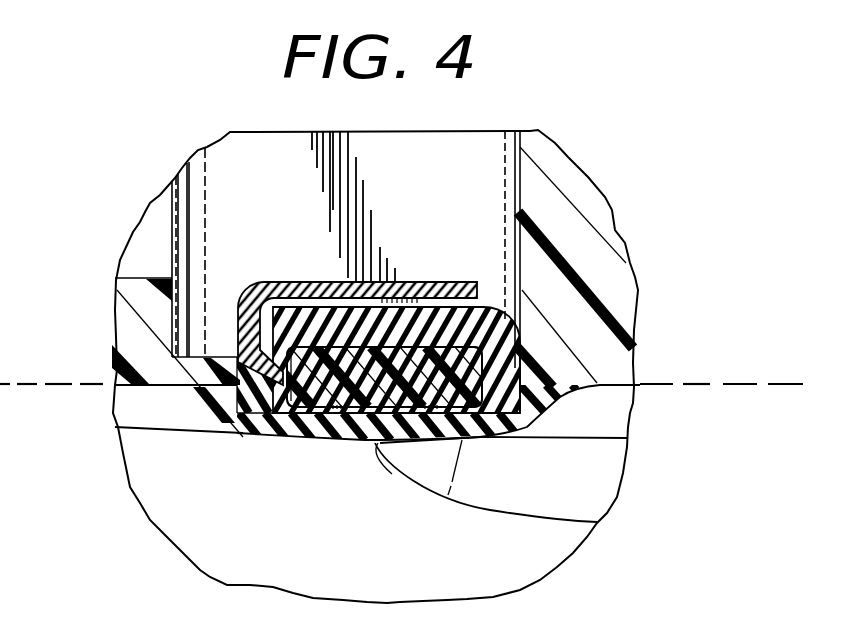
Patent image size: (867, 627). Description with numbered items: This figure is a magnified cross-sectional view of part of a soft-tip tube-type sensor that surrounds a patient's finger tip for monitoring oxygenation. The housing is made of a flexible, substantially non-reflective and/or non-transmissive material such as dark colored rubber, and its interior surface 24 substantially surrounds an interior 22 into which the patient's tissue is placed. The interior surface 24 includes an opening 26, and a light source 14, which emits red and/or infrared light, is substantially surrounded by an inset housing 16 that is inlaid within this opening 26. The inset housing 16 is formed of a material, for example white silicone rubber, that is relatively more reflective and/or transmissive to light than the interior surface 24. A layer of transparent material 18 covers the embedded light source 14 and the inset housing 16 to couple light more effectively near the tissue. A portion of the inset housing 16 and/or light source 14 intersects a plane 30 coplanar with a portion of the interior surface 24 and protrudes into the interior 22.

The light source 14 is at (455, 357).
The inset housing 16 is at (487, 313).
The transparent material 18 is at (478, 445).
The interior 22 is at (182, 412).
The interior surface 24 is at (145, 386).
The opening 26 is at (251, 290).
The plane 30 is at (735, 383).